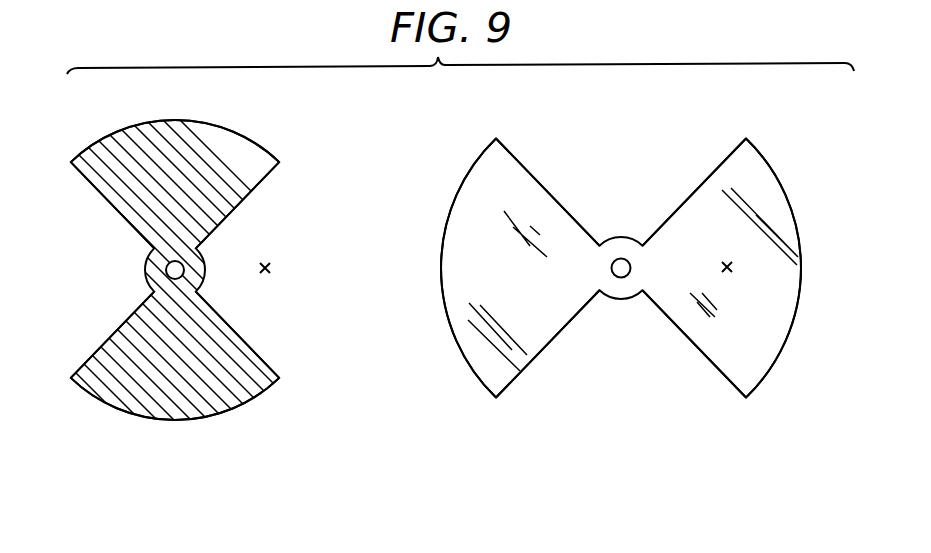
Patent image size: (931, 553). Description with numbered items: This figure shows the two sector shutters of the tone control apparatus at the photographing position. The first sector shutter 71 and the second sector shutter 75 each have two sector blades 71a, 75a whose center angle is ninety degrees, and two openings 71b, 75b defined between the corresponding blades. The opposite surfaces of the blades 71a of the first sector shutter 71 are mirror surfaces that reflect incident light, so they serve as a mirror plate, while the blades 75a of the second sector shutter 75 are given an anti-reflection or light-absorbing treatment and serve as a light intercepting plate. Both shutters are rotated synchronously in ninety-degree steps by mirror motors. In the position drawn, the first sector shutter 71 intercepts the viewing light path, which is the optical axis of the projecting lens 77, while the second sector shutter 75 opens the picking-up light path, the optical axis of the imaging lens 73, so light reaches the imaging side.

The second sector shutter 75 is at (112, 143).
The sector blade 75a is at (222, 136).
The opening 75b is at (92, 220).
The imaging lens 73 is at (266, 262).
The first sector shutter 71 is at (741, 148).
The sector blade 71a is at (478, 160).
The opening 71b is at (616, 155).
The projecting lens 77 is at (726, 268).